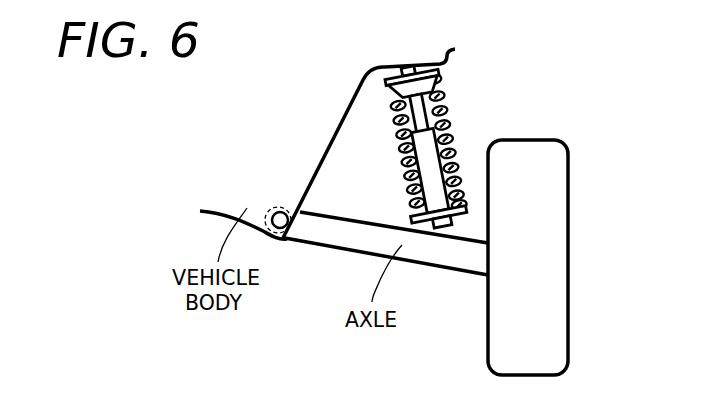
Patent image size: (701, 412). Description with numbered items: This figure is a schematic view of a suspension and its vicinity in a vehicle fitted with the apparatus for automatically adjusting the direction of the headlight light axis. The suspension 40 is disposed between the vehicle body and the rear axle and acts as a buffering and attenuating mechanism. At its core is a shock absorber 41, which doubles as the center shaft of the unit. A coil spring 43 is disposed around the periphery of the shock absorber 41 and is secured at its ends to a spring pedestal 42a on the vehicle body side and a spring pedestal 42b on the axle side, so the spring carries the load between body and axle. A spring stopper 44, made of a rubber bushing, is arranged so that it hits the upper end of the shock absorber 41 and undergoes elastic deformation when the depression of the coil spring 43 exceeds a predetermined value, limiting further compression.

The suspension 40 is at (546, 48).
The shock absorber 41 is at (450, 127).
The spring pedestal on the vehicle body side 42a is at (450, 53).
The spring pedestal on the axle side 42b is at (413, 219).
The coil spring 43 is at (455, 158).
The spring stopper 44 is at (438, 96).